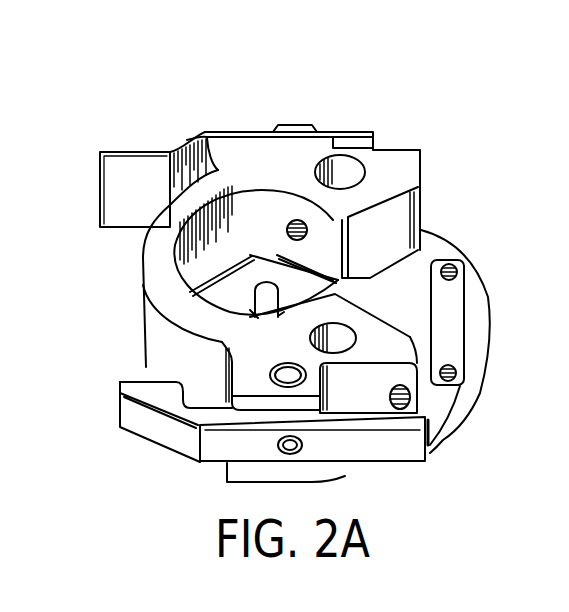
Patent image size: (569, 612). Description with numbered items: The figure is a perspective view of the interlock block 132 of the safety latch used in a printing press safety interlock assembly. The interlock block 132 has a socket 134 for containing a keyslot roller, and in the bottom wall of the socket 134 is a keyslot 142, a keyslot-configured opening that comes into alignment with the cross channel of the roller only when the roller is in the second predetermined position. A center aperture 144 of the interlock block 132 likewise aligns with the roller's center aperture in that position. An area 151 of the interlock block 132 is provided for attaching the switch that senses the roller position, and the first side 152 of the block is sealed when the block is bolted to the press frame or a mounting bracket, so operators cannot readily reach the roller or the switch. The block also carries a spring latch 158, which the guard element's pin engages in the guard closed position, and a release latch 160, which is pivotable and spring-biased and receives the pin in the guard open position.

The interlock block 132 is at (423, 222).
The socket 134 is at (223, 272).
The keyslot 142 is at (270, 292).
The center aperture 144 is at (252, 308).
The area 151 is at (460, 319).
The first side 152 is at (298, 160).
The spring latch 158 is at (187, 140).
The release latch 160 is at (175, 452).